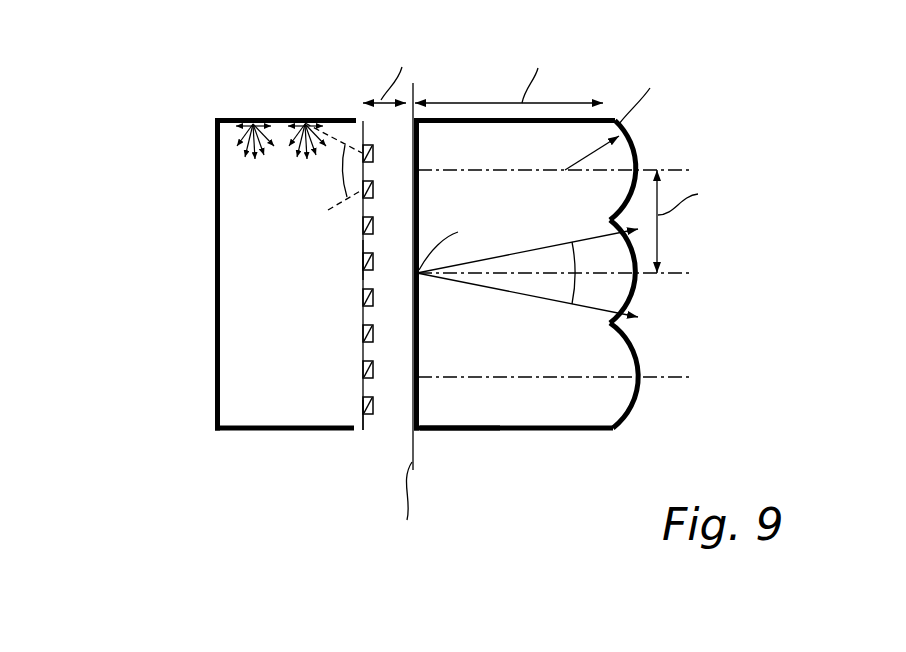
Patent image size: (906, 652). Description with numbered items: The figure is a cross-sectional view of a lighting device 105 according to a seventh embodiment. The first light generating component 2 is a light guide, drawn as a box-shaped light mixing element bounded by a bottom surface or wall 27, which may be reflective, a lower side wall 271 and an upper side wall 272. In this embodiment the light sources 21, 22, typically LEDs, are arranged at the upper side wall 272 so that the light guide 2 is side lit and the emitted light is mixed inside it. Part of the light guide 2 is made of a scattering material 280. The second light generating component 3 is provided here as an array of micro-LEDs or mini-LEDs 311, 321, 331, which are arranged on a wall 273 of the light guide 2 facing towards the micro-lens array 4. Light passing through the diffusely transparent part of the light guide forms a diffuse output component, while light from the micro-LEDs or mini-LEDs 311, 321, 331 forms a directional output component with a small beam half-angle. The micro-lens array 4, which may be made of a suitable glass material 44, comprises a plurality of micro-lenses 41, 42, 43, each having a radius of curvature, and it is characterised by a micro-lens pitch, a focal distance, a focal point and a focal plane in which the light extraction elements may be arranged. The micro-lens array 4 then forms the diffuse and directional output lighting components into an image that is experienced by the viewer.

The lighting device 105 is at (153, 102).
The first light generating component 2 is at (213, 130).
The light source 21 is at (253, 122).
The light source 22 is at (305, 122).
The bottom surface or wall 27 is at (220, 310).
The lower side wall 271 is at (282, 430).
The upper side wall 272 is at (220, 118).
The wall 273 is at (362, 307).
The scattering material wall 280 is at (360, 207).
The second light generating component 3 is at (376, 440).
The micro-LED or mini-LED 311 is at (344, 430).
The micro-LED or mini-LED 321 is at (373, 262).
The micro-LED or mini-LED 331 is at (417, 138).
The micro-lens array 4 is at (497, 432).
The micro-lens 41 is at (637, 157).
The micro-lens 42 is at (637, 287).
The micro-lens 43 is at (635, 395).
The glass material 44 is at (462, 405).